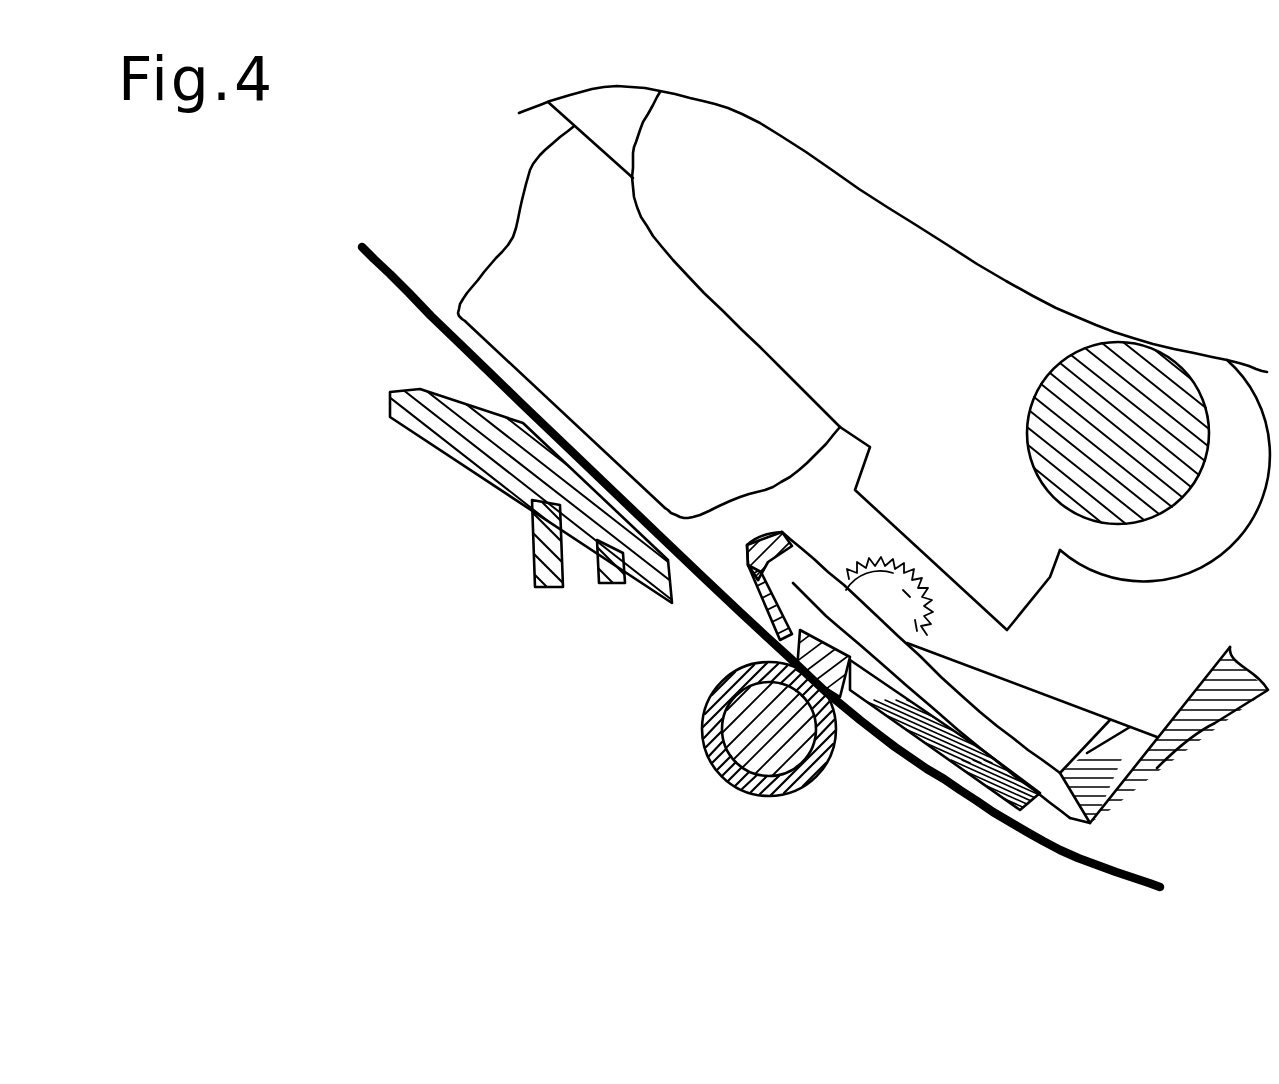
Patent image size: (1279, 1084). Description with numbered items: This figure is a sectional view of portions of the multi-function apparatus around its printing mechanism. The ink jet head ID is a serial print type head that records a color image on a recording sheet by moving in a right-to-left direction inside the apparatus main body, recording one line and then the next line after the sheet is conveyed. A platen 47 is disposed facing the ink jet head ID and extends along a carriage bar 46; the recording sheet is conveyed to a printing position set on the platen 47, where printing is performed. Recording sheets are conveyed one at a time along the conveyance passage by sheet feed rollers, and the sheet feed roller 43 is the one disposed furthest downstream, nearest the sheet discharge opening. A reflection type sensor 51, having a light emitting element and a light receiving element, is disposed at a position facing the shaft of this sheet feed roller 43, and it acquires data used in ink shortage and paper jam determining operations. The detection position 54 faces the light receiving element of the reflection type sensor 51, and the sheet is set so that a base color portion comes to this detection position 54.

The ink jet head ID is at (829, 358).
The carriage bar 46 is at (1118, 376).
The platen 47 is at (530, 379).
The reflection type sensor 51 is at (907, 643).
The sheet feed roller 43 is at (738, 738).
The detection position 54 is at (733, 645).